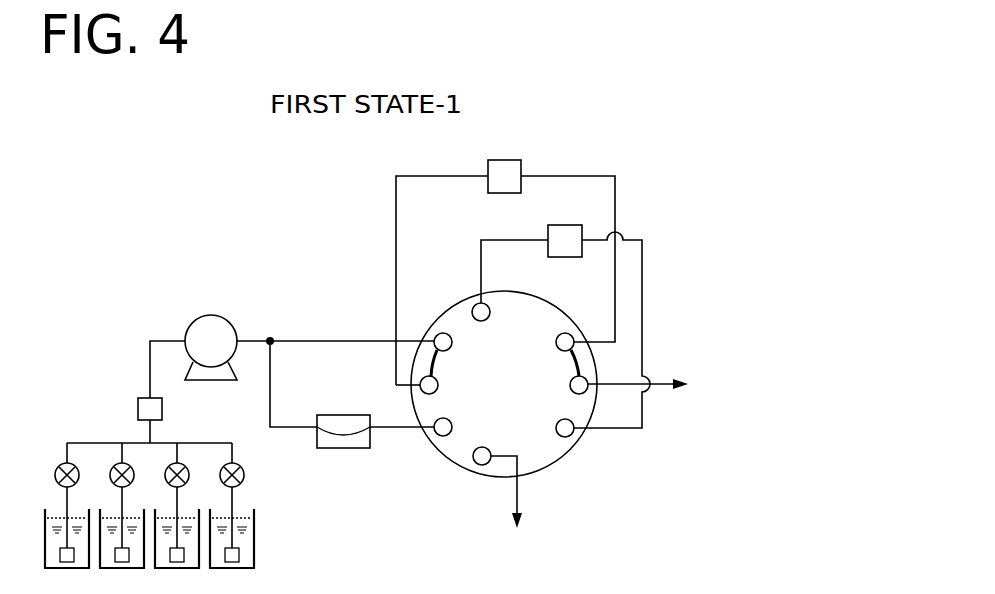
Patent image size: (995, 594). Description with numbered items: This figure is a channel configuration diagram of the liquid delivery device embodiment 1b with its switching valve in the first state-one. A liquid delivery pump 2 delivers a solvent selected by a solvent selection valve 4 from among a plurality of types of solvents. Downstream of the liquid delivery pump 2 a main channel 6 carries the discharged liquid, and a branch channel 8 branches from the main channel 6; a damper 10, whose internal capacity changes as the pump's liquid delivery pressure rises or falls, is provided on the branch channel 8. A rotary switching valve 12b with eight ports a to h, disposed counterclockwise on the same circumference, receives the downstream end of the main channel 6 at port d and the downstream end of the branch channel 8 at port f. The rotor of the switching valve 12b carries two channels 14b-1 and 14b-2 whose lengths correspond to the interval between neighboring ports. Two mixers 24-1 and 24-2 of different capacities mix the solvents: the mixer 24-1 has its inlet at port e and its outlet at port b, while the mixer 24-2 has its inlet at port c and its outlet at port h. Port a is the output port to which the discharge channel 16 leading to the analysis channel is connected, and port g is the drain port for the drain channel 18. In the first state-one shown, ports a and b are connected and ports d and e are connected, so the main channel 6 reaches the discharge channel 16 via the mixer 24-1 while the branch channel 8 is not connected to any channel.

The embodiment of liquid delivery device 1b is at (200, 245).
The liquid delivery pump 2 is at (220, 317).
The solvent selection valve 4 is at (244, 471).
The main channel 6 is at (314, 337).
The branch channel 8 is at (268, 388).
The damper 10 is at (353, 450).
The rotary switching valve 12b is at (559, 308).
The channel 14b-1 is at (431, 360).
The channel 14b-2 is at (585, 362).
The discharge channel 16 is at (658, 380).
The drain channel 18 is at (521, 497).
The mixer 24-1 is at (503, 160).
The mixer 24-2 is at (568, 225).